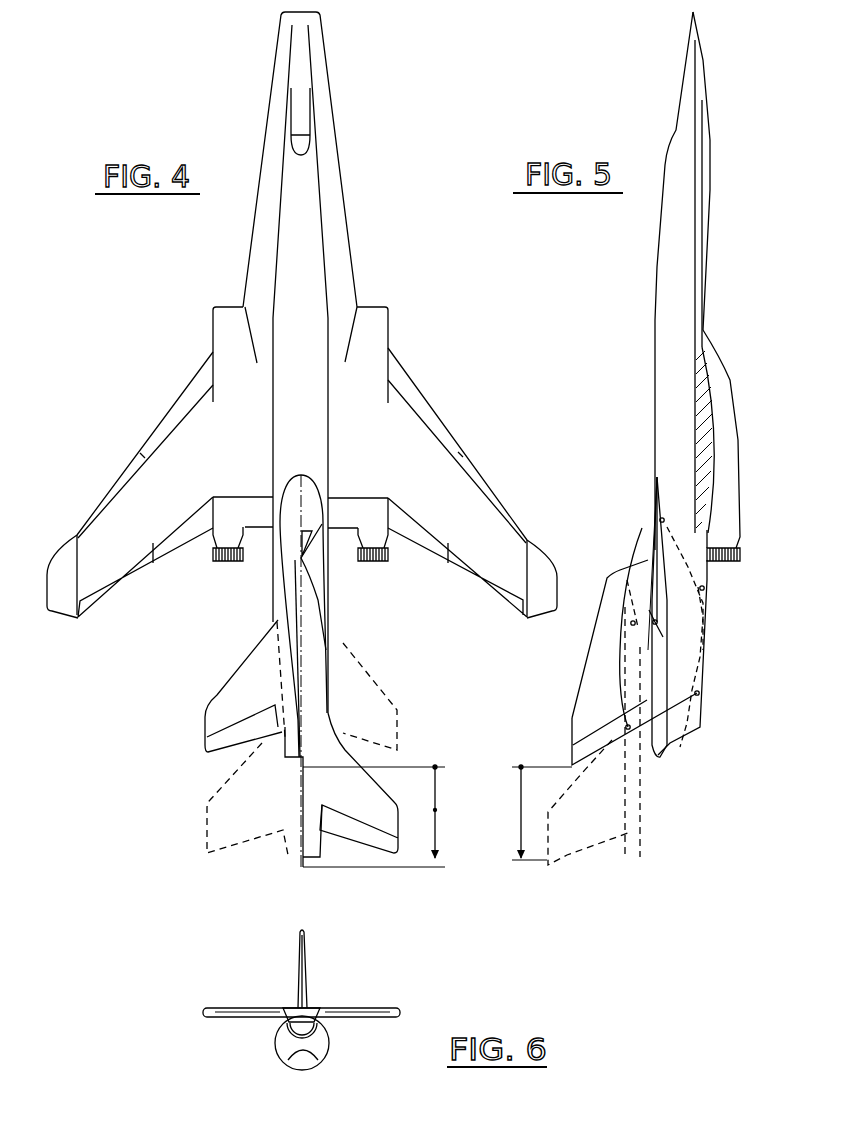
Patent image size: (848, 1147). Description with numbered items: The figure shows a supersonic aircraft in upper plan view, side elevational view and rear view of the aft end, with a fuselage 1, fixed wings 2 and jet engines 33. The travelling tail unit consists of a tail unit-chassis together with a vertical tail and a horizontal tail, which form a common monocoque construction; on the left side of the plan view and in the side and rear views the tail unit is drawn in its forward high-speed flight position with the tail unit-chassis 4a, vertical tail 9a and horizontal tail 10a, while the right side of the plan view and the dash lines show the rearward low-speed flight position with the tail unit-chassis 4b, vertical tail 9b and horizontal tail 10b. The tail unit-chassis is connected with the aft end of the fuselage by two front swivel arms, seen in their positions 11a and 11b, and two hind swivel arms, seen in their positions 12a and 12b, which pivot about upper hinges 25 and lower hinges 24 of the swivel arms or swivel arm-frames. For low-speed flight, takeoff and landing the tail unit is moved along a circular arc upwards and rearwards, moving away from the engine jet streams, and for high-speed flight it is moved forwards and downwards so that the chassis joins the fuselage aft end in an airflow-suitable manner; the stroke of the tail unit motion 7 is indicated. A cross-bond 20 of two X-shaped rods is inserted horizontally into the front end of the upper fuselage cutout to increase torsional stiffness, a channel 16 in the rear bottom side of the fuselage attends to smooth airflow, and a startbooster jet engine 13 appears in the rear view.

In FIG. 4, the fuselage 1 is at (293, 288).
In FIG. 5, the fuselage 1 is at (668, 280).
In FIG. 6, the fuselage 1 is at (302, 1063).
In FIG. 4, the fixed wings 2 is at (175, 457).
In FIG. 5, the fixed wings 2 is at (695, 417).
In FIG. 4, the jet engines 33 is at (382, 345).
In FIG. 5, the jet engines 33 is at (728, 453).
In FIG. 4, the tail unit-chassis in its forward high-speed flight position 4a is at (288, 565).
In FIG. 5, the tail unit-chassis in its forward high-speed flight position 4a is at (628, 582).
In FIG. 6, the tail unit-chassis in its forward high-speed flight position 4a is at (287, 1010).
In FIG. 4, the tail unit-chassis in its rearward low-speed flight position 4b is at (315, 643).
In FIG. 5, the tail unit-chassis in its rearward low-speed flight position 4b is at (655, 622).
In FIG. 4, the cross-bond 20 is at (303, 560).
In FIG. 4, the horizontal tail in its forward high-speed flight position 10a is at (233, 691).
In FIG. 6, the horizontal tail in its forward high-speed flight position 10a is at (233, 1008).
In FIG. 4, the horizontal tail in its rearward low-speed flight position 10b is at (367, 815).
In FIG. 4, the stroke of the tail unit motion 7 is at (435, 810).
In FIG. 5, the stroke of the tail unit motion 7 is at (523, 783).
In FIG. 5, the upper hinges of the swivel arms or of the swivel arm-frames 25 is at (652, 562).
In FIG. 5, the front swivel arms in their forward high-speed flight position 11a is at (685, 557).
In FIG. 5, the front swivel arms in their rearward low-speed flight position 11b is at (678, 600).
In FIG. 5, the lower hinges of the swivel arms or of the swivel arm-frames 24 is at (704, 587).
In FIG. 5, the channel in the rear bottom side of the fuselage 16 is at (703, 655).
In FIG. 6, the channel in the rear bottom side of the fuselage 16 is at (310, 1050).
In FIG. 5, the hind swivel arms in their forward high-speed flight position 12a is at (678, 657).
In FIG. 5, the hind swivel arms in their rearward low-speed flight position 12b is at (672, 703).
In FIG. 5, the vertical tail in its forward high-speed flight position 9a is at (600, 718).
In FIG. 5, the vertical tail in its rearward low-speed flight position 9b is at (567, 855).
In FIG. 6, the startbooster jet engine 13 is at (298, 1037).